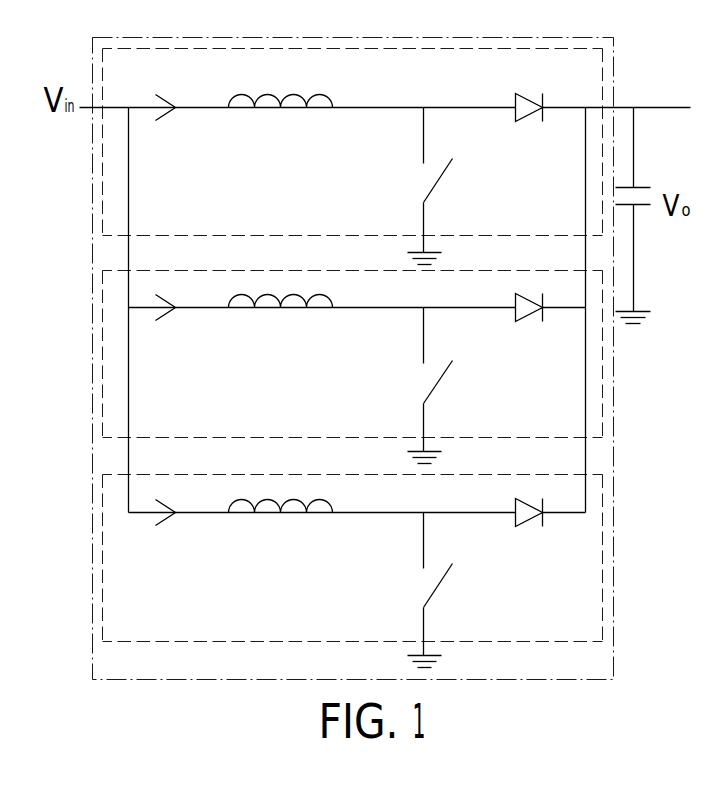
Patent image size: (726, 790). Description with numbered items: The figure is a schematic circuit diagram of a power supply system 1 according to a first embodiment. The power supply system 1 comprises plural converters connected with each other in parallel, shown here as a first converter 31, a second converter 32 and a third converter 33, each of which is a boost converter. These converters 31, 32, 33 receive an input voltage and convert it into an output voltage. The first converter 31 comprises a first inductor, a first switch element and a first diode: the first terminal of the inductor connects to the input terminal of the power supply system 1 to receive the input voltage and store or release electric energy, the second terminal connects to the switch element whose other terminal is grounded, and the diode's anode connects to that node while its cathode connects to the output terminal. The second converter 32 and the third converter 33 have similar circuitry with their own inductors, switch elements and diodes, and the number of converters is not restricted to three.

The power supply system 1 is at (612, 44).
The first converter 31 is at (602, 74).
The second converter 32 is at (602, 412).
The third converter 33 is at (602, 543).